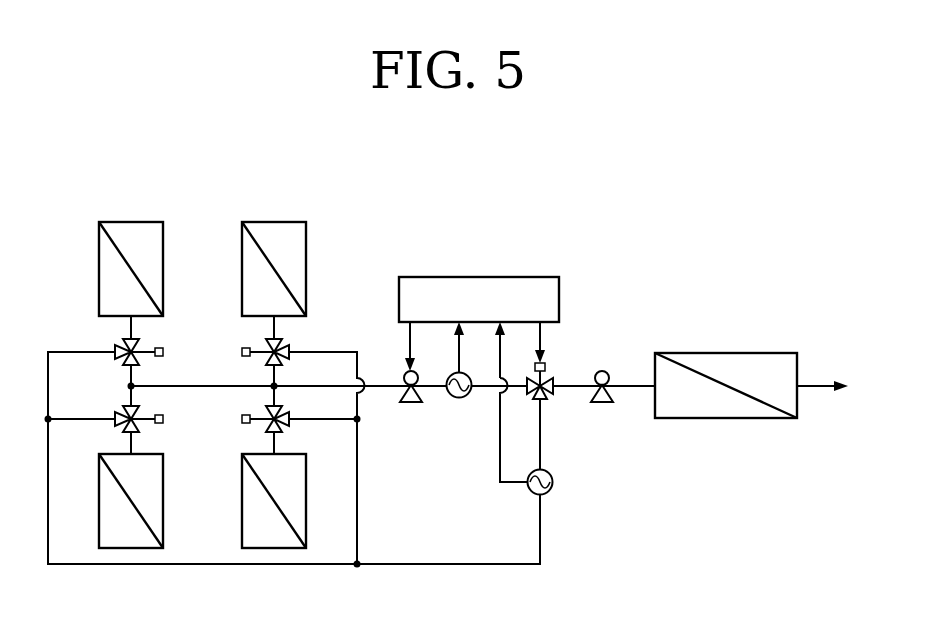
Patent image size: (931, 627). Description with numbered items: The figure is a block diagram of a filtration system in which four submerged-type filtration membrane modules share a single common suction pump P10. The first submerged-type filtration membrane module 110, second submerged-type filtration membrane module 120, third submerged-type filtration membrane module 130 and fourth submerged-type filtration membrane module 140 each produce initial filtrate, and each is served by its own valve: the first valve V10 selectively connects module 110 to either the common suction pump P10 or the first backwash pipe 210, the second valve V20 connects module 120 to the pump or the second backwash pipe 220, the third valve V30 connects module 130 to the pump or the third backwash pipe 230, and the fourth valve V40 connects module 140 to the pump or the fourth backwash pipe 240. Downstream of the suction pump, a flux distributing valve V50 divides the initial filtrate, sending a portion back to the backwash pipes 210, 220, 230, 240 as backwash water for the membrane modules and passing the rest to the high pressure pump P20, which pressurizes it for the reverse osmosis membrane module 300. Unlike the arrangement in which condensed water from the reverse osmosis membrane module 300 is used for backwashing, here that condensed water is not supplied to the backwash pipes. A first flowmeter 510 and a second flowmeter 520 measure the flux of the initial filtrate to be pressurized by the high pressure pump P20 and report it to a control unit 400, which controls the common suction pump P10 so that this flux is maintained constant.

The first submerged-type filtration membrane module 110 is at (146, 221).
The second submerged-type filtration membrane module 120 is at (289, 221).
The third submerged-type filtration membrane module 130 is at (118, 549).
The fourth submerged-type filtration membrane module 140 is at (261, 549).
The first backwash pipe 210 is at (67, 350).
The second backwash pipe 220 is at (333, 350).
The third backwash pipe 230 is at (72, 421).
The fourth backwash pipe 240 is at (334, 421).
The reverse osmosis membrane module 300 is at (763, 352).
The control unit 400 is at (512, 276).
The first flowmeter 510 is at (458, 399).
The second flowmeter 520 is at (553, 478).
The first valve V10 is at (163, 357).
The second valve V20 is at (242, 348).
The third valve V30 is at (163, 424).
The fourth valve V40 is at (242, 415).
The flux distributing valve V50 is at (547, 364).
The common suction pump P10 is at (411, 400).
The high pressure pump P20 is at (603, 400).